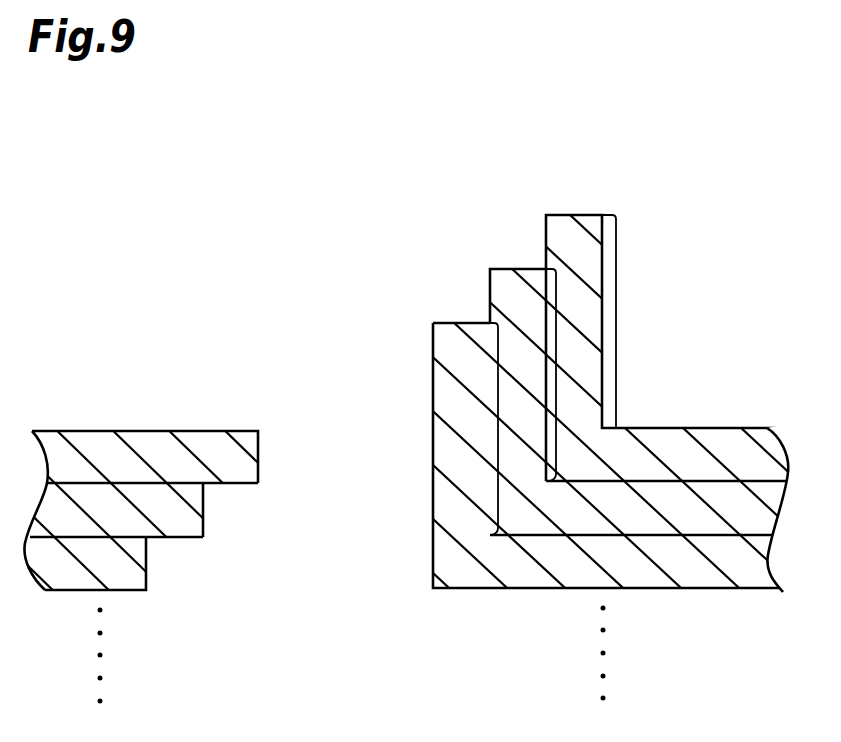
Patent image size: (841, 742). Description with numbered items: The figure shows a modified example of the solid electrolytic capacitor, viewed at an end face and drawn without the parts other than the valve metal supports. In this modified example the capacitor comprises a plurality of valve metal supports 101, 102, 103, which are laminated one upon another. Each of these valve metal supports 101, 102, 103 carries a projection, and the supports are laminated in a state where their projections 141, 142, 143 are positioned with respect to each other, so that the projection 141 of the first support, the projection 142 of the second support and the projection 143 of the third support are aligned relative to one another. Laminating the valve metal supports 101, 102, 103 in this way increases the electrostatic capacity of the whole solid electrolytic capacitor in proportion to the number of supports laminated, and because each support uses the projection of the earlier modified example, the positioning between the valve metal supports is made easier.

The valve metal support 101 is at (258, 456).
The valve metal support 102 is at (203, 504).
The valve metal support 103 is at (146, 557).
The projection 141 is at (616, 326).
The projection 142 is at (556, 378).
The projection 143 is at (498, 431).